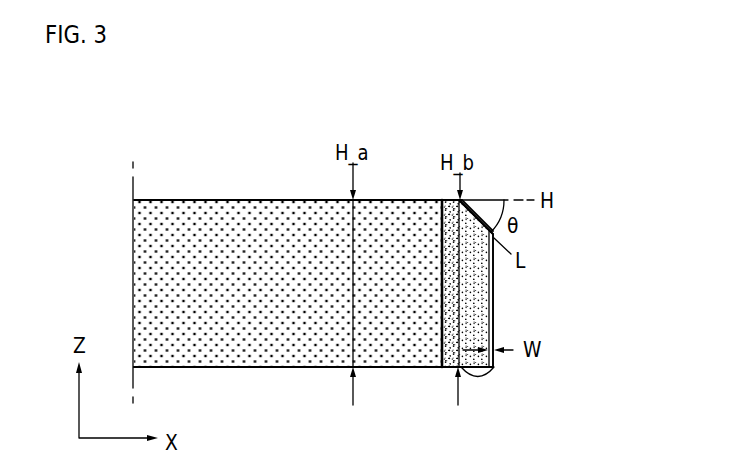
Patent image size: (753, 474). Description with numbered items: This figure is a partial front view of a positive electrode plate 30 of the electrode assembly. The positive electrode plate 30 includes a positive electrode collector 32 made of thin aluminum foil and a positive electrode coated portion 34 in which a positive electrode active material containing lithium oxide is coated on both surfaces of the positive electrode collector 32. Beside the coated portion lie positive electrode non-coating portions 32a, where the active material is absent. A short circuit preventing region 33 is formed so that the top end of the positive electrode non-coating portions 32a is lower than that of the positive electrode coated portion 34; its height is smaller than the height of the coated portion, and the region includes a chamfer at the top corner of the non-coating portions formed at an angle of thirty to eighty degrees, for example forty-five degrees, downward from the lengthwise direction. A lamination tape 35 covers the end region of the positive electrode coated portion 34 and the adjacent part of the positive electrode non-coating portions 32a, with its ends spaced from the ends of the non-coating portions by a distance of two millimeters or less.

The positive electrode plate 30 is at (313, 261).
The positive electrode collector 32 is at (500, 283).
The positive electrode non-coating portions 32a is at (497, 401).
The short circuit preventing region 33 is at (501, 169).
The positive electrode coated portion 34 is at (313, 390).
The lamination tape 35 is at (495, 261).